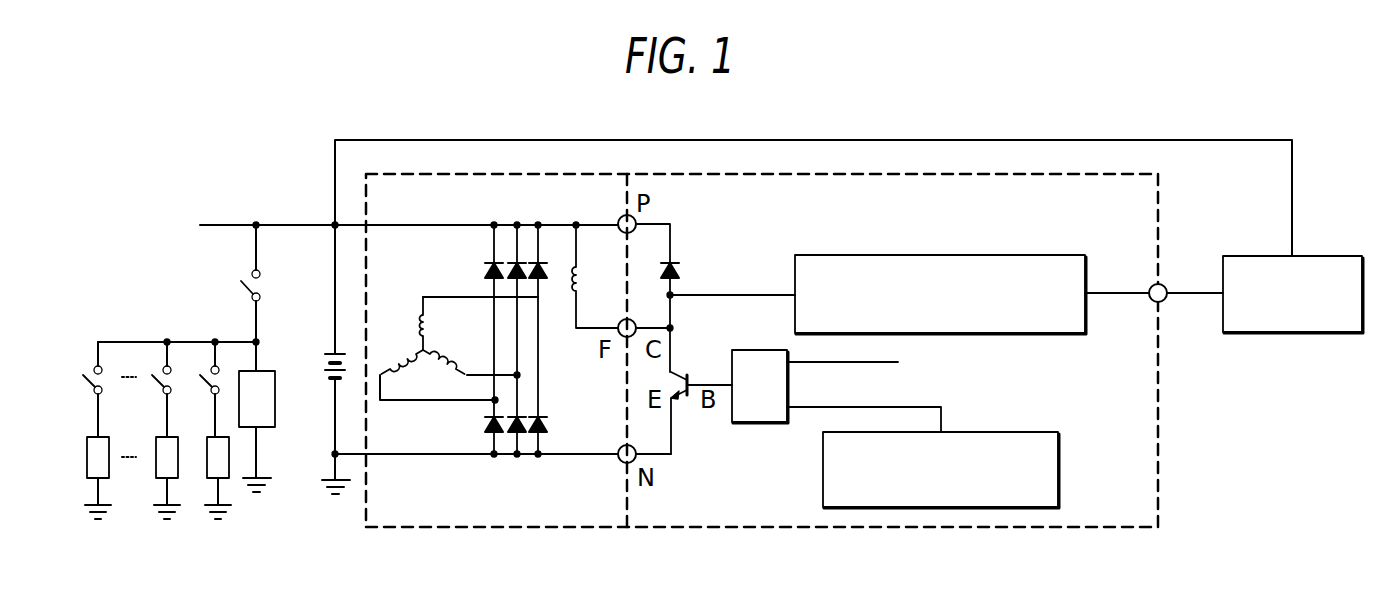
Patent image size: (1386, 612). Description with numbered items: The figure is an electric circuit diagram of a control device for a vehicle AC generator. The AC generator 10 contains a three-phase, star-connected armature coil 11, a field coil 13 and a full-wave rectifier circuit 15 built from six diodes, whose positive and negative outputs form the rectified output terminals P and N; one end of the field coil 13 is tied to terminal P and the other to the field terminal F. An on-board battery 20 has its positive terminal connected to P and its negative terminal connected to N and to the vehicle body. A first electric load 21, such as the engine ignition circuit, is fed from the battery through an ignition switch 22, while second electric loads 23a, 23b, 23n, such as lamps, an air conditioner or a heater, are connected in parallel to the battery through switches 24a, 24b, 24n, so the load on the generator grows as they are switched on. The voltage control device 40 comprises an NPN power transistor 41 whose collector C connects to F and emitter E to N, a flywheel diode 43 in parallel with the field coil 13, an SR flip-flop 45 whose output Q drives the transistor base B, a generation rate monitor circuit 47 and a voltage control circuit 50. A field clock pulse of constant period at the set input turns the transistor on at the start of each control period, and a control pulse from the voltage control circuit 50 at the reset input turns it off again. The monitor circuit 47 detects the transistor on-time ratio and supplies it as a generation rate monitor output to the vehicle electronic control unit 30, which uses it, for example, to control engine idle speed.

The AC generator 10 is at (505, 527).
The armature coil 11 is at (422, 310).
The field coil 13 is at (573, 300).
The full-wave rectifier circuit 15 is at (530, 392).
The on-board battery 20 is at (328, 356).
The first electric load 21 is at (265, 430).
The ignition switch 22 is at (246, 284).
The second electric load 23a is at (225, 480).
The second electric load 23b is at (160, 480).
The second electric load 23n is at (90, 480).
The switch 24a is at (202, 376).
The switch 24b is at (153, 376).
The switch 24n is at (84, 378).
The vehicle electronic control unit 30 is at (1293, 333).
The voltage control device 40 is at (812, 527).
The power transistor 41 is at (676, 372).
The flywheel diode 43 is at (672, 262).
The SR flip-flop 45 is at (759, 423).
The generation rate monitor circuit 47 is at (940, 255).
The voltage control circuit 50 is at (1058, 470).